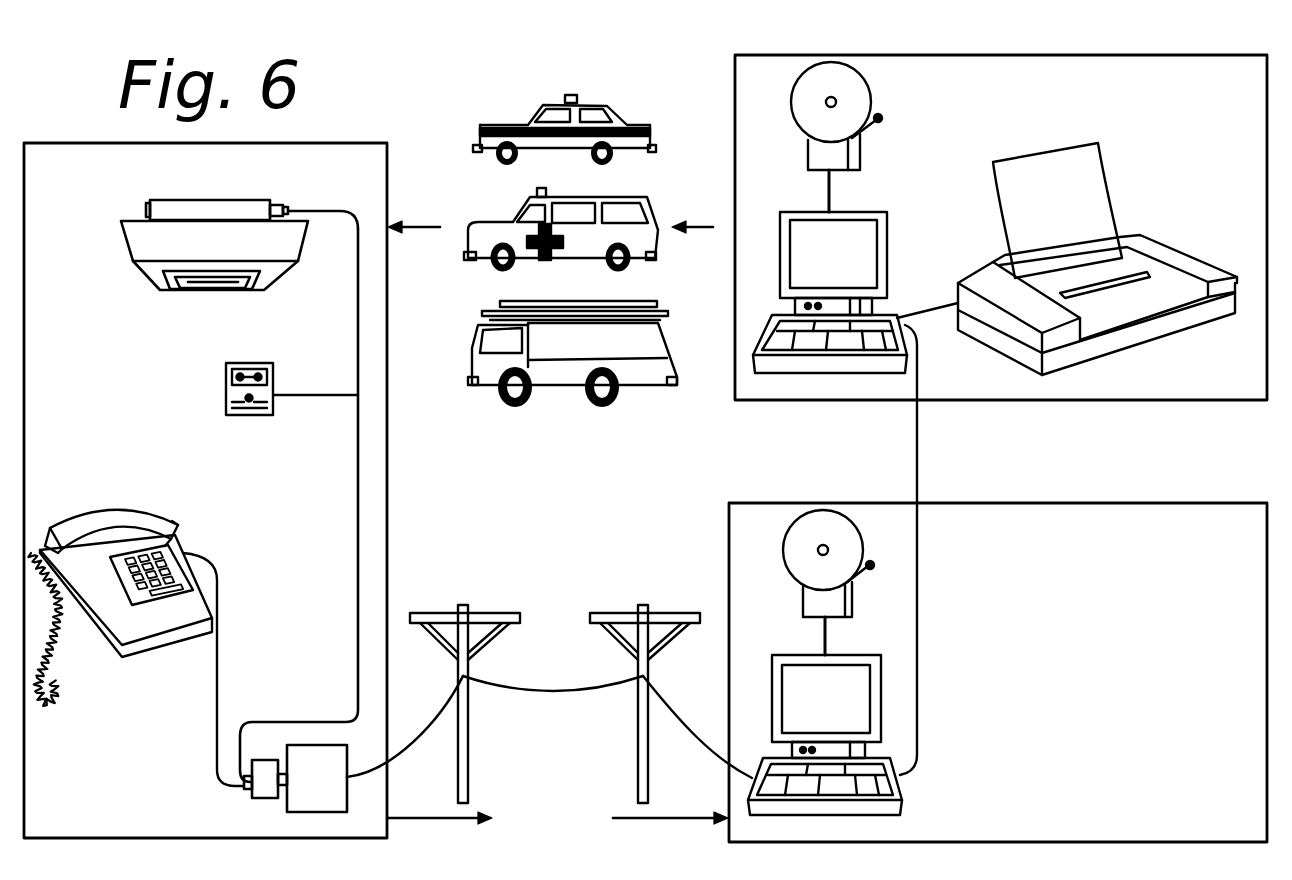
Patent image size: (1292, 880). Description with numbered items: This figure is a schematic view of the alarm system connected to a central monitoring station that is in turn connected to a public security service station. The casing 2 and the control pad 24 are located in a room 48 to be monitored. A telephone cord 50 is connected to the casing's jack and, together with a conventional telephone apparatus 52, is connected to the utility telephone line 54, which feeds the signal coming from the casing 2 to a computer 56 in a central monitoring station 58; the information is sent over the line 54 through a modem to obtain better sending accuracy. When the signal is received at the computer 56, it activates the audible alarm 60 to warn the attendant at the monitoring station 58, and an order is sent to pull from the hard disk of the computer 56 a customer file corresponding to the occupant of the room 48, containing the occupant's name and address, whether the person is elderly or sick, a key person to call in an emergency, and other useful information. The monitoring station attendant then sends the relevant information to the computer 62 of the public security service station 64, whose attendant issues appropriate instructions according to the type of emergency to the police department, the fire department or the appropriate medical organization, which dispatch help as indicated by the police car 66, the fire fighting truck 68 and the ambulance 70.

The casing 2 is at (147, 285).
The control pad 24 is at (226, 396).
The room 48 is at (205, 490).
The telephone cord 50 is at (358, 553).
The telephone apparatus 52 is at (153, 626).
The utility telephone line 54 is at (573, 694).
The computer 56 is at (906, 790).
The central monitoring station 58 is at (1143, 495).
The audible alarm 60 is at (805, 527).
The computer 62 is at (825, 366).
The public security service station 64 is at (972, 401).
The police car 66 is at (613, 124).
The fire fighting truck 68 is at (565, 370).
The ambulance 70 is at (640, 230).